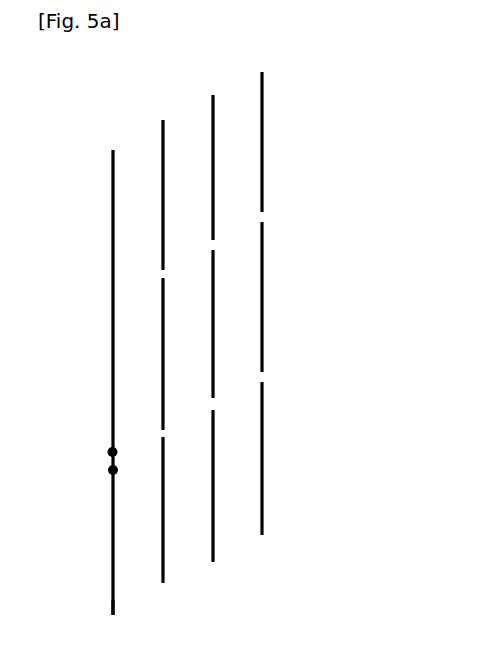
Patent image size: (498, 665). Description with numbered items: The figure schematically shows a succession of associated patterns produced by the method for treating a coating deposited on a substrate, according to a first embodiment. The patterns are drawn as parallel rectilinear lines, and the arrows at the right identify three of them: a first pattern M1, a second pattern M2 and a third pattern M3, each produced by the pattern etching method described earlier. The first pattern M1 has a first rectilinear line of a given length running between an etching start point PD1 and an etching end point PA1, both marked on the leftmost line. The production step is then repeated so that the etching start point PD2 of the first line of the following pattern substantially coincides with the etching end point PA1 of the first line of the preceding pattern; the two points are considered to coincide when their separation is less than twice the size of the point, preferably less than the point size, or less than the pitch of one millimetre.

The first pattern M1 is at (276, 440).
The second pattern M2 is at (283, 292).
The third pattern M3 is at (279, 150).
The etching start point PD1 is at (93, 613).
The etching start point of the following pattern PD2 is at (95, 444).
The etching end point PA1 is at (95, 480).